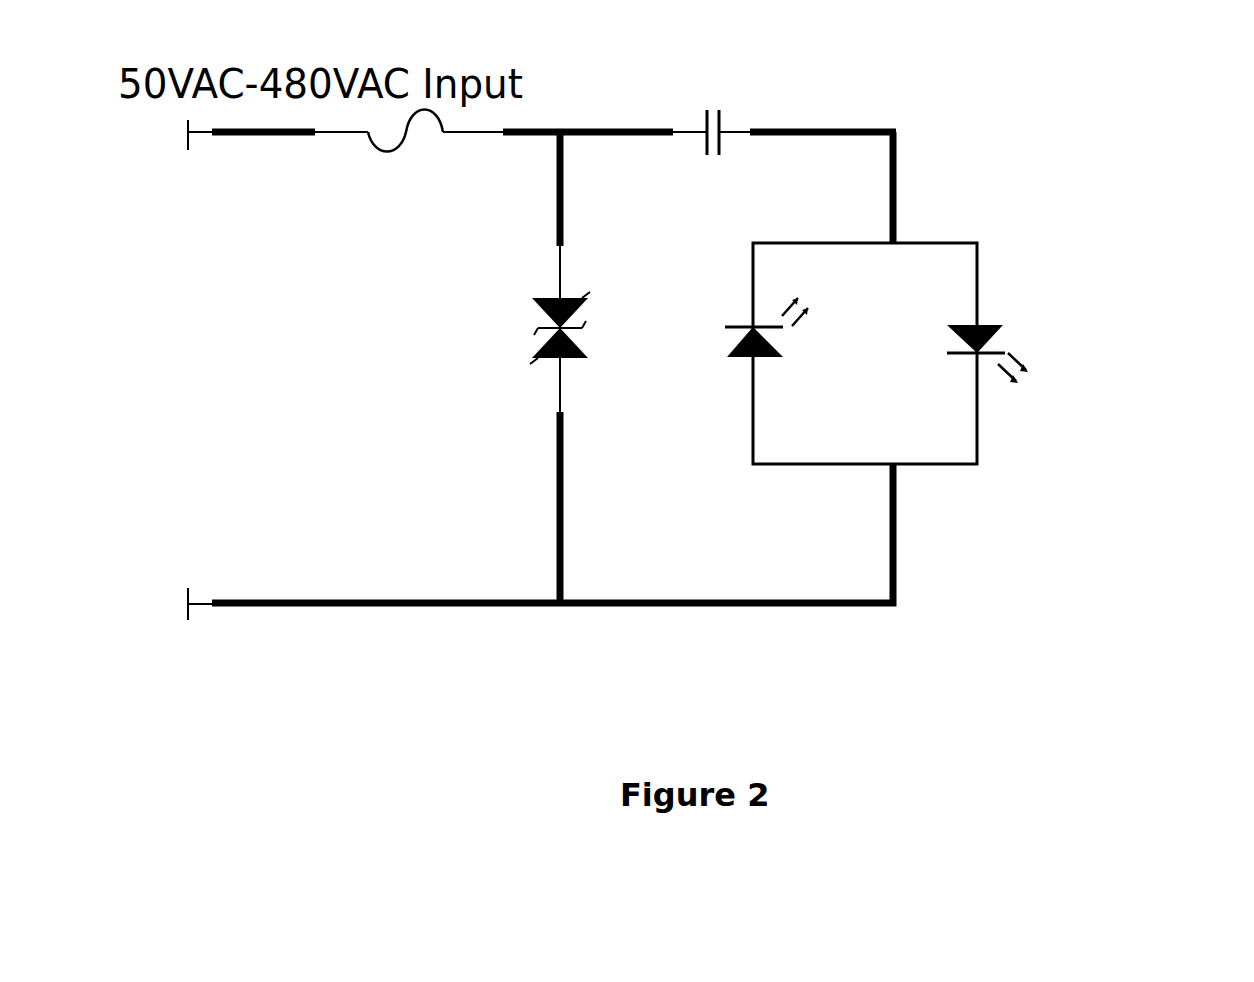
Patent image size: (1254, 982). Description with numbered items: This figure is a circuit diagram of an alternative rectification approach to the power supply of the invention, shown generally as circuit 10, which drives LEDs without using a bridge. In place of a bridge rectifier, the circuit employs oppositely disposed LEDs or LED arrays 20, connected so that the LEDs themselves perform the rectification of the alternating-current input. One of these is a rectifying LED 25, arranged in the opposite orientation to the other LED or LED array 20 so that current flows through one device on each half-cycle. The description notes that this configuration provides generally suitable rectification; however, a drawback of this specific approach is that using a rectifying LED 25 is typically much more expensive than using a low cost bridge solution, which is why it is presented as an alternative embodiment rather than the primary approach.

The LED lighting circuit 10 is at (1053, 100).
The LEDs or LED arrays 20 is at (990, 313).
The rectifying LED 25 is at (745, 355).